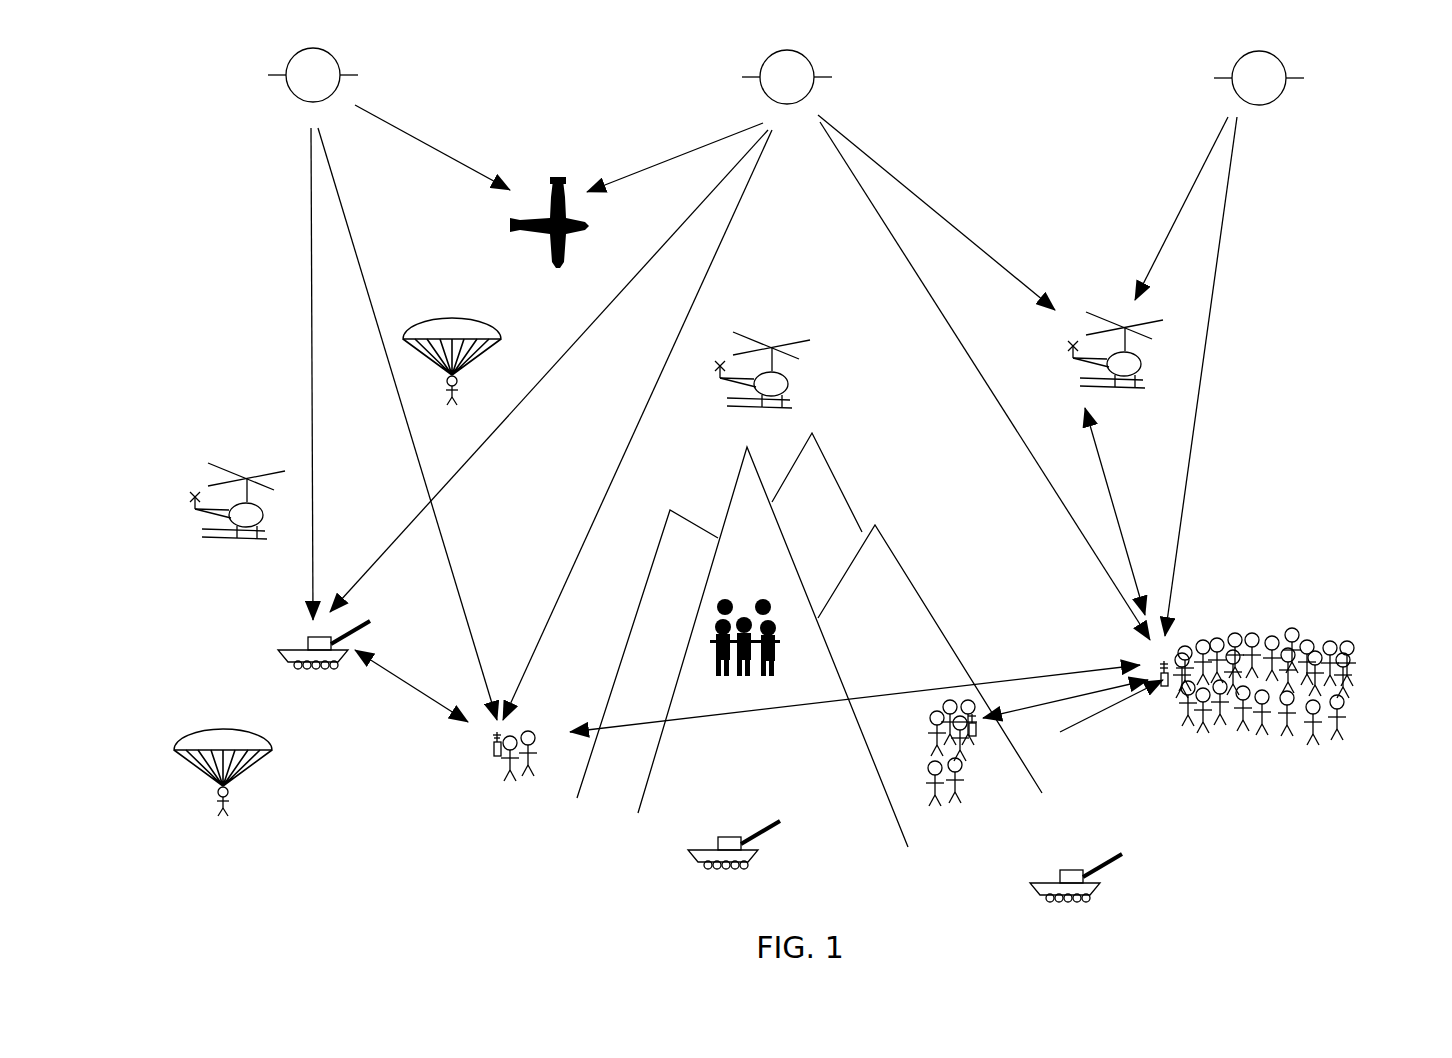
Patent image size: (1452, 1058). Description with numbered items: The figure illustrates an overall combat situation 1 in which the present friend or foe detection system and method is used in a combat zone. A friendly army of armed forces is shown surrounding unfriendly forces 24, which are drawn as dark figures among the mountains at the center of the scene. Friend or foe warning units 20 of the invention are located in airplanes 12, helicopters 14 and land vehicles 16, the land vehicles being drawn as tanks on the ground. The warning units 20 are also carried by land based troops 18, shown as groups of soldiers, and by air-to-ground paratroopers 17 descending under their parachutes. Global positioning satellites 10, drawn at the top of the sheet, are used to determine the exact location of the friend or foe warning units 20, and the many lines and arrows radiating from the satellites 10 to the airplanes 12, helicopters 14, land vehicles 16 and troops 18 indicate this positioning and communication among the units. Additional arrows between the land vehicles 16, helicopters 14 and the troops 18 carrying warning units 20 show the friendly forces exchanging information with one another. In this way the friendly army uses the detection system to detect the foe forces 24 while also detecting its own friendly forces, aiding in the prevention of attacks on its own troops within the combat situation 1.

The combat situation 1 is at (1378, 105).
The global positioning satellites 10 is at (298, 95).
The airplanes 12 is at (543, 233).
The helicopters 14 is at (250, 482).
The land vehicles 16 is at (290, 670).
The air-to-ground paratroopers 17 is at (465, 361).
The land based troops 18 is at (507, 795).
The friend or foe warning units 20 is at (495, 757).
The unfriendly forces 24 is at (748, 590).